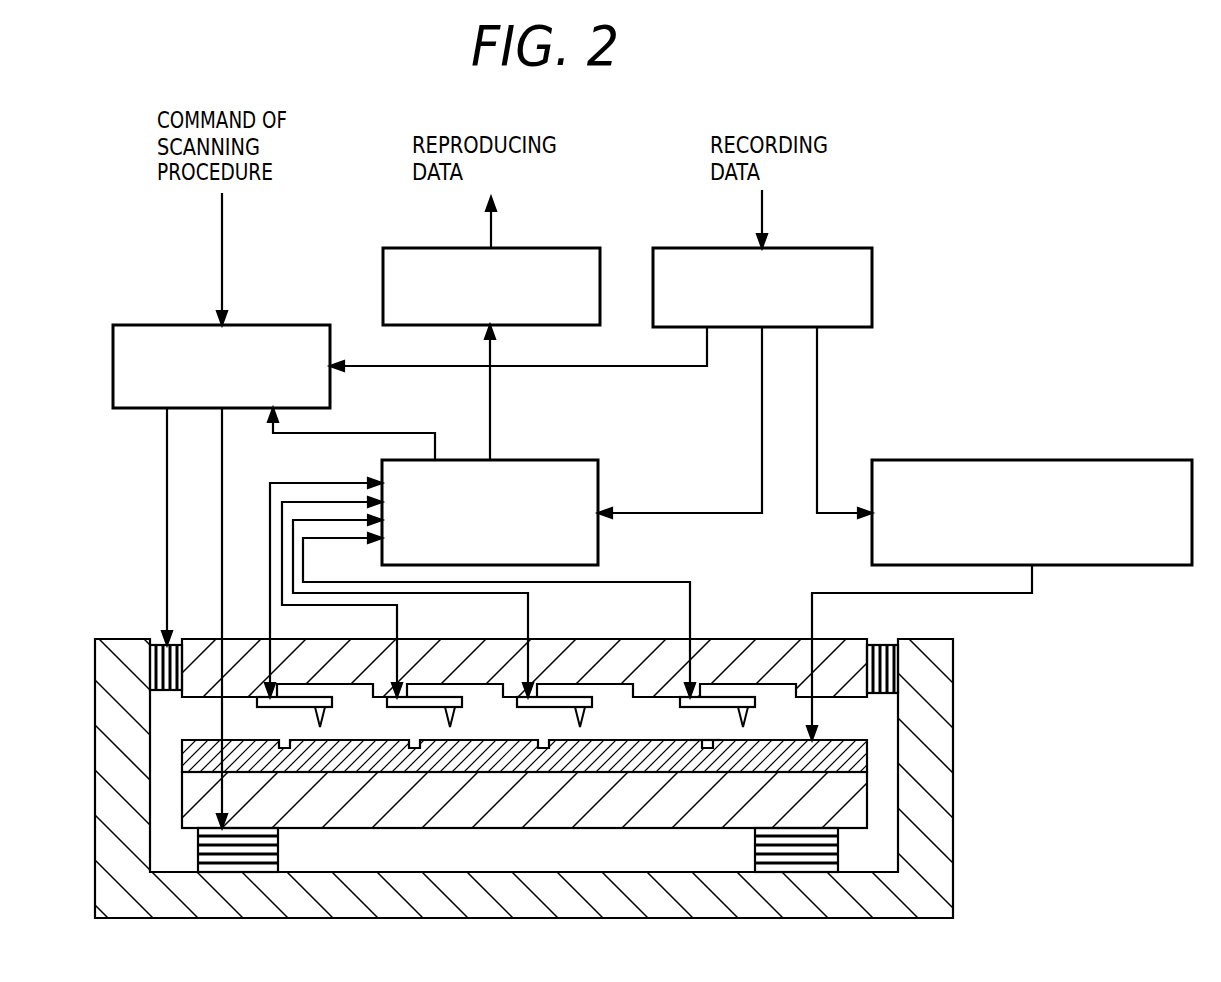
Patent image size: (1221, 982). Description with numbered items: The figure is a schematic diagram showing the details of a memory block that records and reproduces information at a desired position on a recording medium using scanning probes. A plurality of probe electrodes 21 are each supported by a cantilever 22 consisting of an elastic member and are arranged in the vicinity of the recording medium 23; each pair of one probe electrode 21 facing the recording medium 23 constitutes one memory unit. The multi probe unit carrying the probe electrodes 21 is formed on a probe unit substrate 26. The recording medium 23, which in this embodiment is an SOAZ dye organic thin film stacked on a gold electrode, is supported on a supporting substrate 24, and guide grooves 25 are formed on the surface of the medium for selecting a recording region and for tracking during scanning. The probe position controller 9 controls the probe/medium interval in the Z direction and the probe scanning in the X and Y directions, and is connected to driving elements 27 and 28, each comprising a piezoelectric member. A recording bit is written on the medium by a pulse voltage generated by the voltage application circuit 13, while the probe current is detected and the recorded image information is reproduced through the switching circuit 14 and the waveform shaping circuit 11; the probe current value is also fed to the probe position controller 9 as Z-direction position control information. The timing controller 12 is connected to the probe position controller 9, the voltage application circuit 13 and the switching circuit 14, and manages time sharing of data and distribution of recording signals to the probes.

The probe position controller 9 is at (282, 325).
The waveform shaping circuit 11 is at (549, 248).
The timing controller 12 is at (820, 248).
The voltage application circuit 13 is at (1105, 460).
The switching circuit 14 is at (556, 460).
The probe electrode 21 is at (452, 706).
The cantilever 22 is at (295, 703).
The recording medium 23 is at (188, 757).
The supporting substrate 24 is at (190, 805).
The guide groove 25 is at (705, 740).
The probe unit substrate 26 is at (785, 655).
The driving element 27 is at (200, 848).
The driving element 28 is at (150, 655).